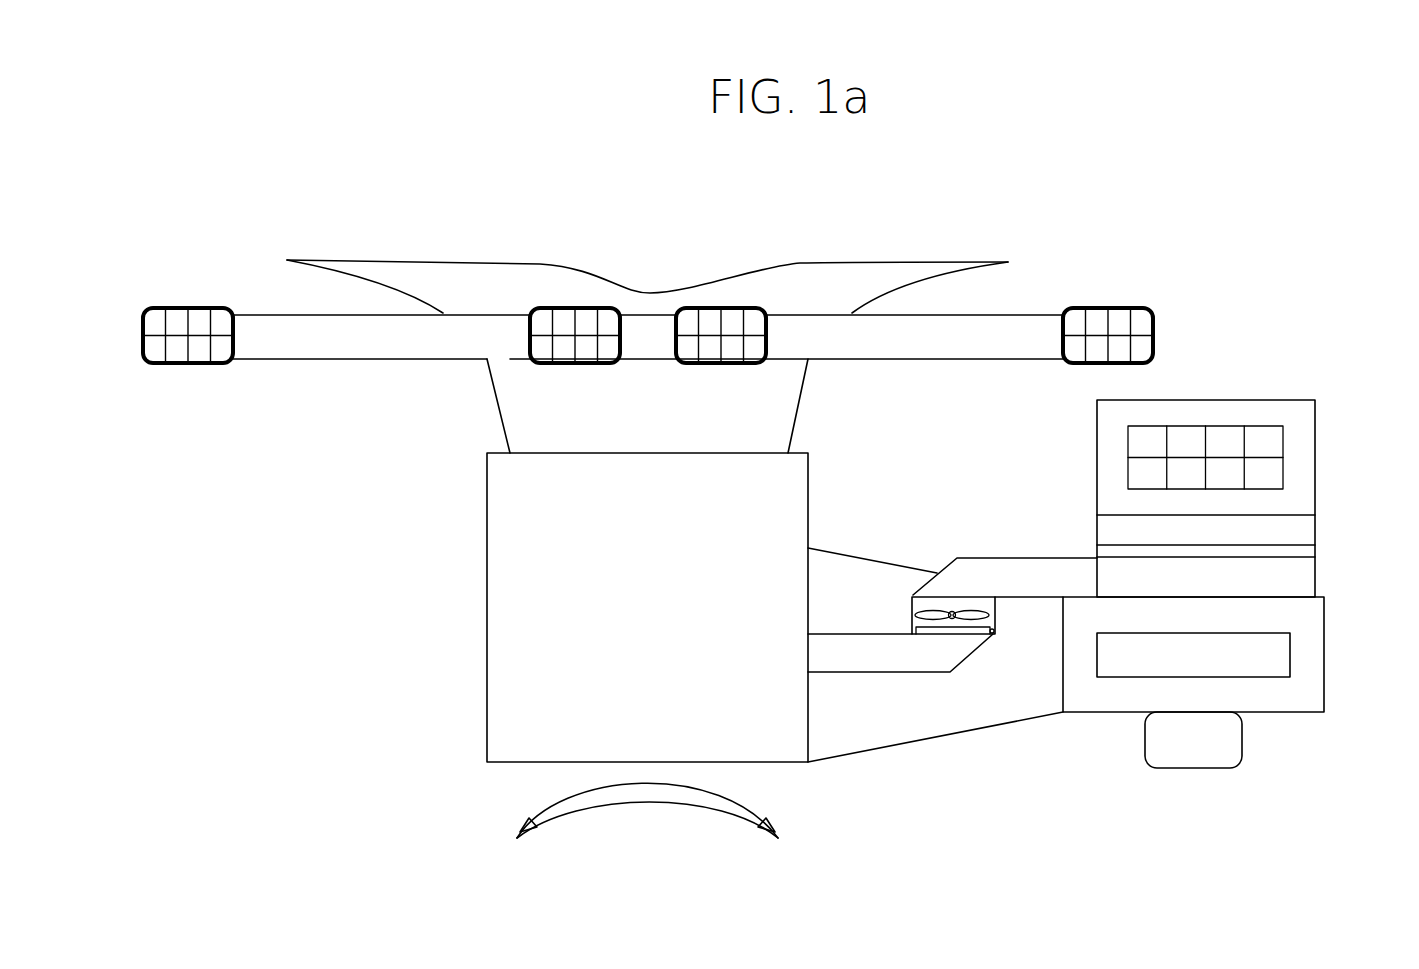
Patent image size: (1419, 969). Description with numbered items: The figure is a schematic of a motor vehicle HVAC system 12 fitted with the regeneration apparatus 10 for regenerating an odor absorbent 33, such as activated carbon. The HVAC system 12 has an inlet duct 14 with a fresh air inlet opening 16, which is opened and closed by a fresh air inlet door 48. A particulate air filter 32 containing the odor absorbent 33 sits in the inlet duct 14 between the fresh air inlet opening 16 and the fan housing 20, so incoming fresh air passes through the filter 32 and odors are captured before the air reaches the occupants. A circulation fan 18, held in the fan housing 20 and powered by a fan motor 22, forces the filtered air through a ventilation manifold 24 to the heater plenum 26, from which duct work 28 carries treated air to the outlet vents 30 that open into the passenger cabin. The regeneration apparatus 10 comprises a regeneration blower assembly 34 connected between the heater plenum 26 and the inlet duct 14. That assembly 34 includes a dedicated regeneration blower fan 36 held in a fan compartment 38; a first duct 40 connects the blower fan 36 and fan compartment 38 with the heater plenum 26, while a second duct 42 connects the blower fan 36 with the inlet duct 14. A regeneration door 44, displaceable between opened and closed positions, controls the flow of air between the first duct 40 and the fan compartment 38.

The regeneration apparatus 10 is at (390, 177).
The HVAC system 12 is at (1307, 326).
The inlet duct 14 is at (1318, 455).
The fresh air inlet opening 16 is at (1232, 440).
The circulation fan 18 is at (1273, 655).
The fan housing 20 is at (1325, 688).
The fan motor 22 is at (1230, 745).
The ventilation manifold 24 is at (947, 712).
The heater plenum 26 is at (508, 644).
The duct work 28 is at (793, 375).
The outlet vents 30 is at (197, 315).
The particulate air filter 32 is at (1315, 520).
The odor absorbent 33 is at (1305, 553).
The regeneration blower assembly 34 is at (1030, 656).
The regeneration blower fan 36 is at (938, 618).
The fan compartment 38 is at (997, 610).
The first duct 40 is at (850, 647).
The second duct 42 is at (1042, 563).
The regeneration door 44 is at (942, 630).
The fresh air inlet door 48 is at (1283, 475).